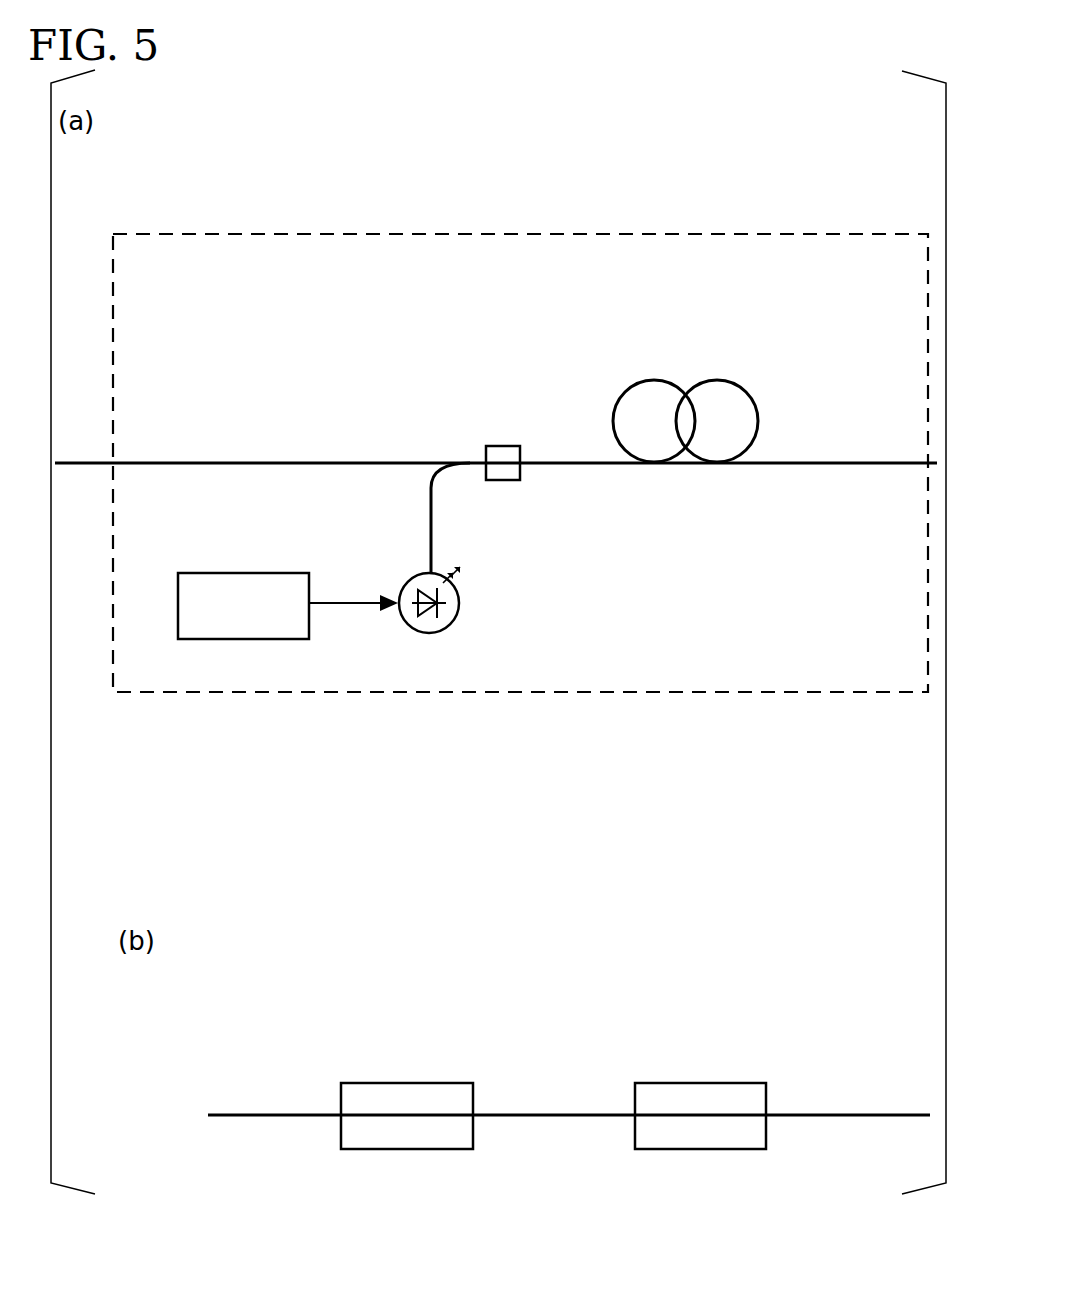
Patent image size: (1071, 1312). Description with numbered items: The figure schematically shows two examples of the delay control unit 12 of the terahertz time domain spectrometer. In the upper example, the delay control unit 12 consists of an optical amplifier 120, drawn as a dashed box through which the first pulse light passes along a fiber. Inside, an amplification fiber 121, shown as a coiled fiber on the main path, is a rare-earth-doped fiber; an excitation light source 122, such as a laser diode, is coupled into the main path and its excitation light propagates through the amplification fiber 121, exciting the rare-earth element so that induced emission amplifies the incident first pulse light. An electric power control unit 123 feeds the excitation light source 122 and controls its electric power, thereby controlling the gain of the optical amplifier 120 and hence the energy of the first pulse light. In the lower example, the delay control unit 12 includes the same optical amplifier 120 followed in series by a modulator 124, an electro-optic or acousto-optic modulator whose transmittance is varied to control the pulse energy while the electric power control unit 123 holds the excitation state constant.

The delay control unit 12 is at (655, 136).
The optical amplifier 120 is at (822, 234).
The amplification fiber 121 is at (716, 378).
The excitation light source 122 is at (454, 621).
The electric power control unit 123 is at (312, 636).
The modulator 124 is at (722, 1147).